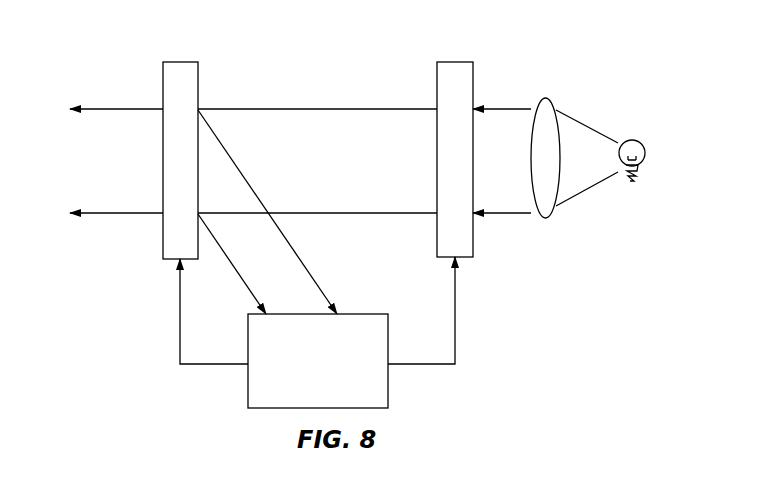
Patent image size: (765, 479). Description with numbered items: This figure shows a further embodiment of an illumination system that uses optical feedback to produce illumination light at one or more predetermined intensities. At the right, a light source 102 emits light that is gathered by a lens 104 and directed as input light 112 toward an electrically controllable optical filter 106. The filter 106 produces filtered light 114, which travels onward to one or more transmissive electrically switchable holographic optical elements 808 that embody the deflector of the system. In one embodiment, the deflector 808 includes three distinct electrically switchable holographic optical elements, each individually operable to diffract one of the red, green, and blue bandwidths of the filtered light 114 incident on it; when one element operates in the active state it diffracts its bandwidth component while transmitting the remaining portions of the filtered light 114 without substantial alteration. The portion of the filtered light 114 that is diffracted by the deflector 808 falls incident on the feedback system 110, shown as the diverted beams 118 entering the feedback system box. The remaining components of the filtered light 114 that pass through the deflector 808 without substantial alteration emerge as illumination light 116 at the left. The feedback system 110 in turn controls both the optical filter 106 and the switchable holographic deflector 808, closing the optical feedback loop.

The light source 102 is at (643, 146).
The lens 104 is at (553, 105).
The electrically controllable optical filter 106 is at (448, 62).
The transmissive electrically switchable holographic optical elements 808 is at (180, 62).
The feedback system 110 is at (247, 373).
The input light beams 112 is at (511, 106).
The filtered light 114 is at (318, 108).
The illumination light 116 is at (117, 108).
The feedback signals 118 is at (313, 262).